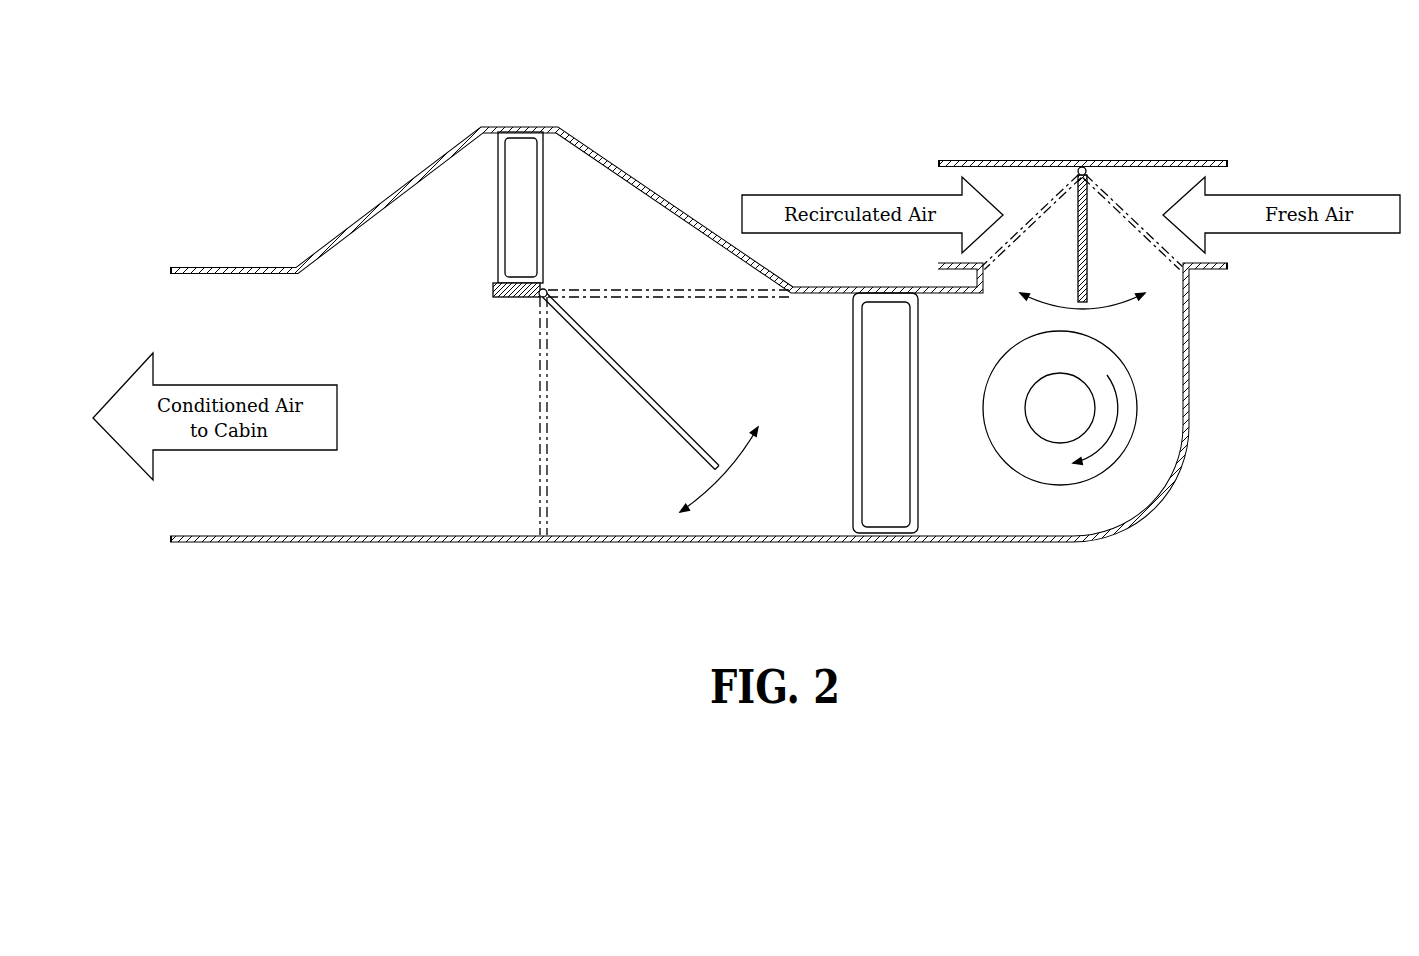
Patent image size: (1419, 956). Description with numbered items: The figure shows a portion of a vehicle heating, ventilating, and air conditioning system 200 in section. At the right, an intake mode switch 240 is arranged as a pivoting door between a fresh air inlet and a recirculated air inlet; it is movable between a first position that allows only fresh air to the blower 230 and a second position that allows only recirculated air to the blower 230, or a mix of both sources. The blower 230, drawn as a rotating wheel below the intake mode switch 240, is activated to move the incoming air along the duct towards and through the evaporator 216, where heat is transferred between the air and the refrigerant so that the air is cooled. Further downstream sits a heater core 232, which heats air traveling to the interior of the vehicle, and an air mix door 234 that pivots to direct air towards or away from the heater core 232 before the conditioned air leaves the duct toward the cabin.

The heating, ventilating, and air conditioning (HVAC) system 200 is at (300, 162).
The evaporator 216 is at (883, 512).
The blower 230 is at (1068, 482).
The heater core 232 is at (513, 177).
The air mix door 234 is at (600, 340).
The intake mode switch 240 is at (1088, 222).